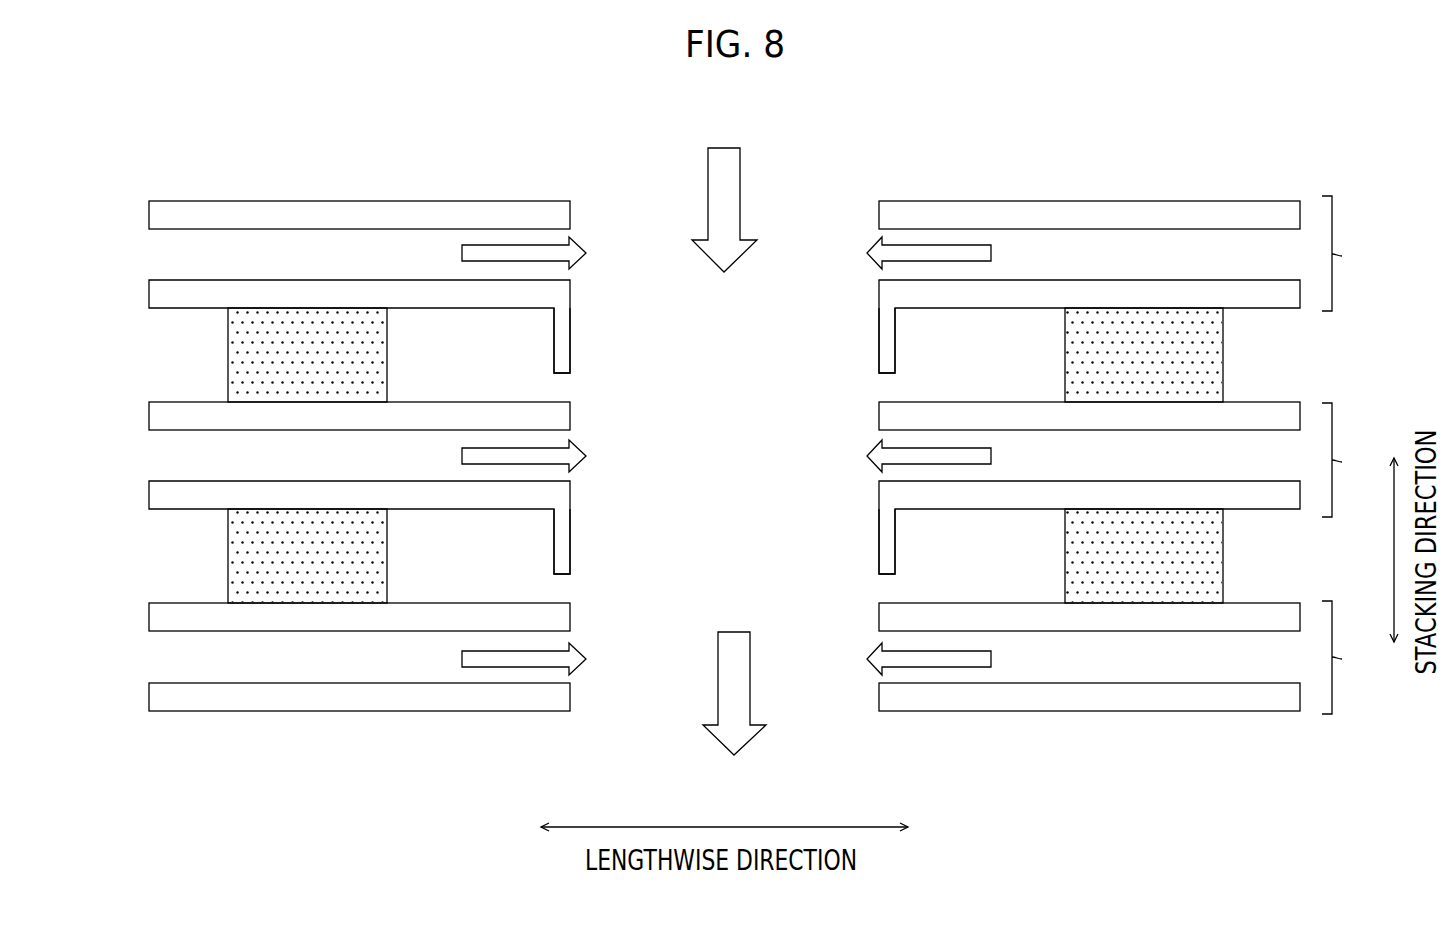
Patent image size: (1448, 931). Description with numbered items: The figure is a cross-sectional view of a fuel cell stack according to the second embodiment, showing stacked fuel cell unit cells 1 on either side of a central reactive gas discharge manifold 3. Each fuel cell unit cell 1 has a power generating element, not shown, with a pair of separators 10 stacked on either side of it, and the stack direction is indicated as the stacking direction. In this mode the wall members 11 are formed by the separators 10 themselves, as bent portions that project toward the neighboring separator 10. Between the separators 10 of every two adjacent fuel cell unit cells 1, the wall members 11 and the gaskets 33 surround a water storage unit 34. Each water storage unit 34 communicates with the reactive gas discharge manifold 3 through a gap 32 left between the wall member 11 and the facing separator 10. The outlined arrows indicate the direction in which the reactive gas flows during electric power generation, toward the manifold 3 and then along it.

The fuel cell unit cell 1 is at (1347, 455).
The reactive gas discharge manifold 3 is at (657, 220).
The separator 10 is at (168, 218).
The wall member 11 is at (562, 350).
The gap 32 is at (562, 386).
The gasket 33 is at (258, 339).
The water storage unit 34 is at (442, 390).